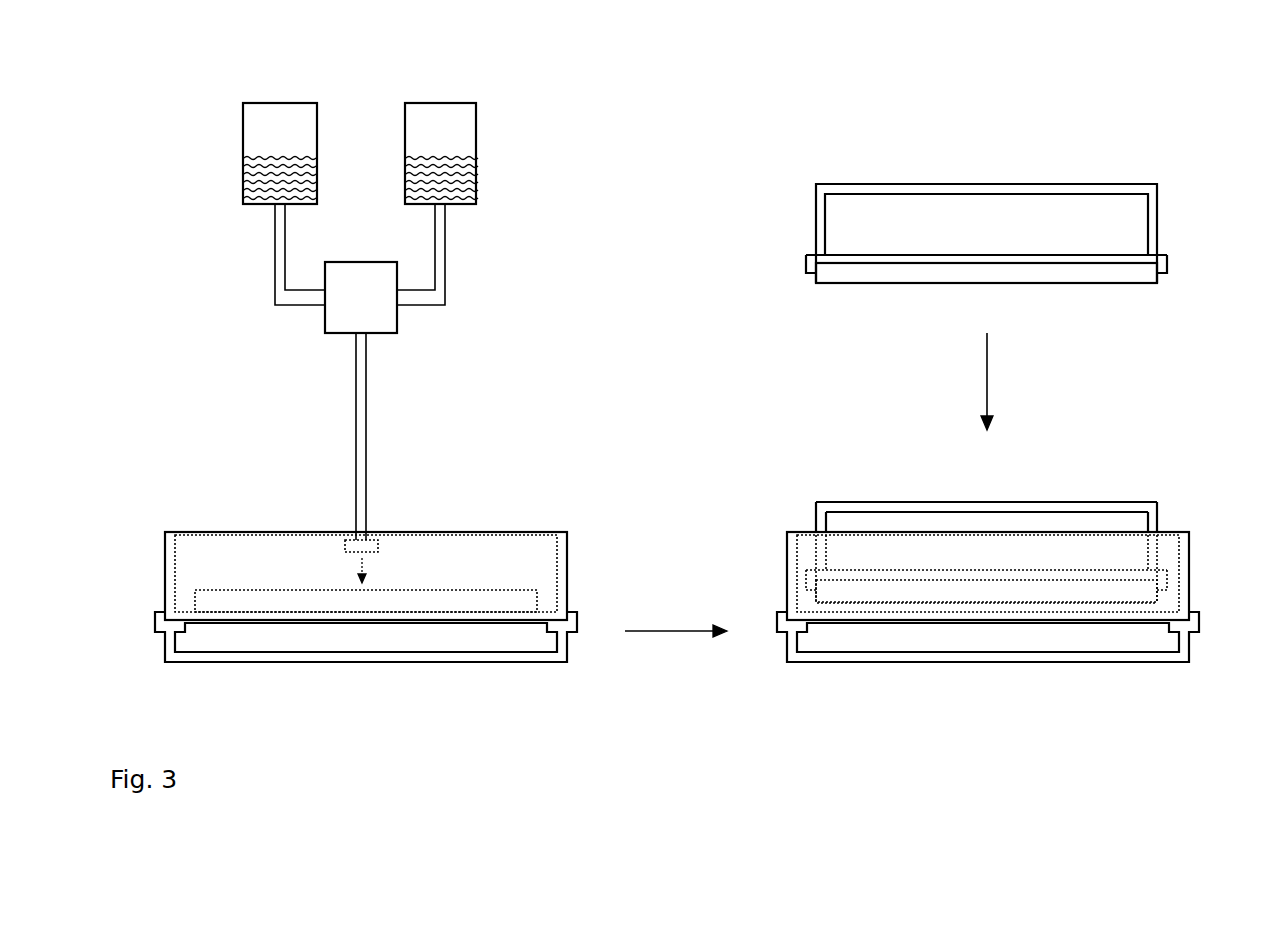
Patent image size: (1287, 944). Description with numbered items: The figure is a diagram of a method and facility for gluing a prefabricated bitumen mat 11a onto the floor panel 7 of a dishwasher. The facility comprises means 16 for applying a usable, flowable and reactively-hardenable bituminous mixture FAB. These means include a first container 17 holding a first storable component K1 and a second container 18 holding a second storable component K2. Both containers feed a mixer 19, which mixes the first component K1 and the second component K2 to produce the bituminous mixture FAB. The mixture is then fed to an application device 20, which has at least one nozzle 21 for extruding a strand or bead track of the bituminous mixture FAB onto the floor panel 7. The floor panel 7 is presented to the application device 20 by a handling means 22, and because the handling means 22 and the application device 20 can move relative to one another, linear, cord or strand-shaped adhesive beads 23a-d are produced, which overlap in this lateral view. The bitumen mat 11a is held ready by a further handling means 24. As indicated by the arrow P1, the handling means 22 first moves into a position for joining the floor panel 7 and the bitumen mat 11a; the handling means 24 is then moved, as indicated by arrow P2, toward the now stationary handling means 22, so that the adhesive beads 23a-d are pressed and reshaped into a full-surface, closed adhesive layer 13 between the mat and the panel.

The means for applying a bituminous mixture 16 is at (170, 156).
The first container 17 is at (243, 113).
The second container 18 is at (476, 137).
The first component K1 is at (317, 175).
The second component K2 is at (476, 195).
The mixer 19 is at (397, 313).
The application device 20 is at (318, 490).
The nozzle 21 is at (345, 547).
The bituminous mixture FAB is at (367, 570).
The floor panel 7 is at (165, 570).
The adhesive beads 23a-d is at (537, 598).
The handling means 22 is at (335, 662).
The handling means 24 is at (947, 183).
The bitumen mat 11a is at (808, 275).
The adhesive layer 13 is at (817, 603).
The arrow P1 is at (676, 644).
The arrow P2 is at (971, 381).